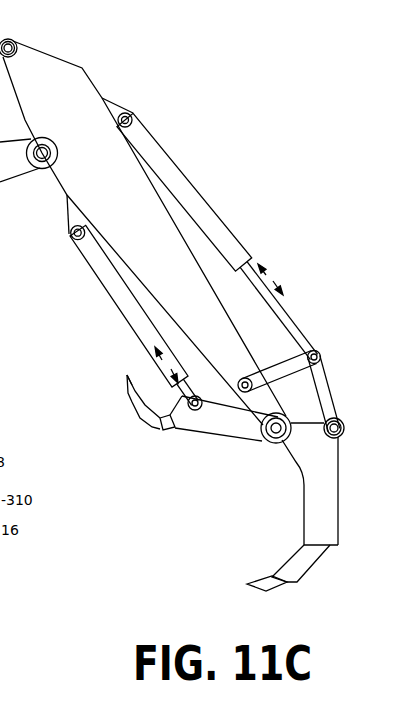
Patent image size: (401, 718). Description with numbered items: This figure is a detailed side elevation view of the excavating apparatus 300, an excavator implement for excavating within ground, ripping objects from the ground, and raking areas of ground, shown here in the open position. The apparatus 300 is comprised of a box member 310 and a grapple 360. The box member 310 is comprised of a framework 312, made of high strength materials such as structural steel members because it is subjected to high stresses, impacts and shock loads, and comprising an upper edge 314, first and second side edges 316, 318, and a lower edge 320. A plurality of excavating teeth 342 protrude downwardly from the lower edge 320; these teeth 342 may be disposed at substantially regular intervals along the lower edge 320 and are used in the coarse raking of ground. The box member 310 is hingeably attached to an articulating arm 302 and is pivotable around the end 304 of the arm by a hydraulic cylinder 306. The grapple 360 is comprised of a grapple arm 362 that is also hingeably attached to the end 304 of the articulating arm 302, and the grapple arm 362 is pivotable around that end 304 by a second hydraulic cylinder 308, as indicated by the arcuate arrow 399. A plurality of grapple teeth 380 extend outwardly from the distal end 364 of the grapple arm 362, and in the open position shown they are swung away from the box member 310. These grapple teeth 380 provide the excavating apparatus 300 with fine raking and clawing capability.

The excavating apparatus 300 is at (249, 158).
The articulating arm 302 is at (148, 235).
The end of the articulating arm 304 is at (268, 403).
The hydraulic cylinder 306 is at (218, 217).
The hydraulic cylinder 308 is at (95, 277).
The box member 310 is at (364, 475).
The framework 312 is at (296, 522).
The upper edge 314 is at (303, 418).
The first side edge 316 is at (325, 499).
The second side edge 318 is at (330, 478).
The lower edge 320 is at (317, 548).
The excavating teeth 342 is at (287, 584).
The grapple 360 is at (206, 448).
The grapple arm 362 is at (207, 413).
The distal end of the grapple arm 364 is at (168, 413).
The grapple teeth 380 is at (137, 410).
The arcuate arrow 399 is at (252, 566).